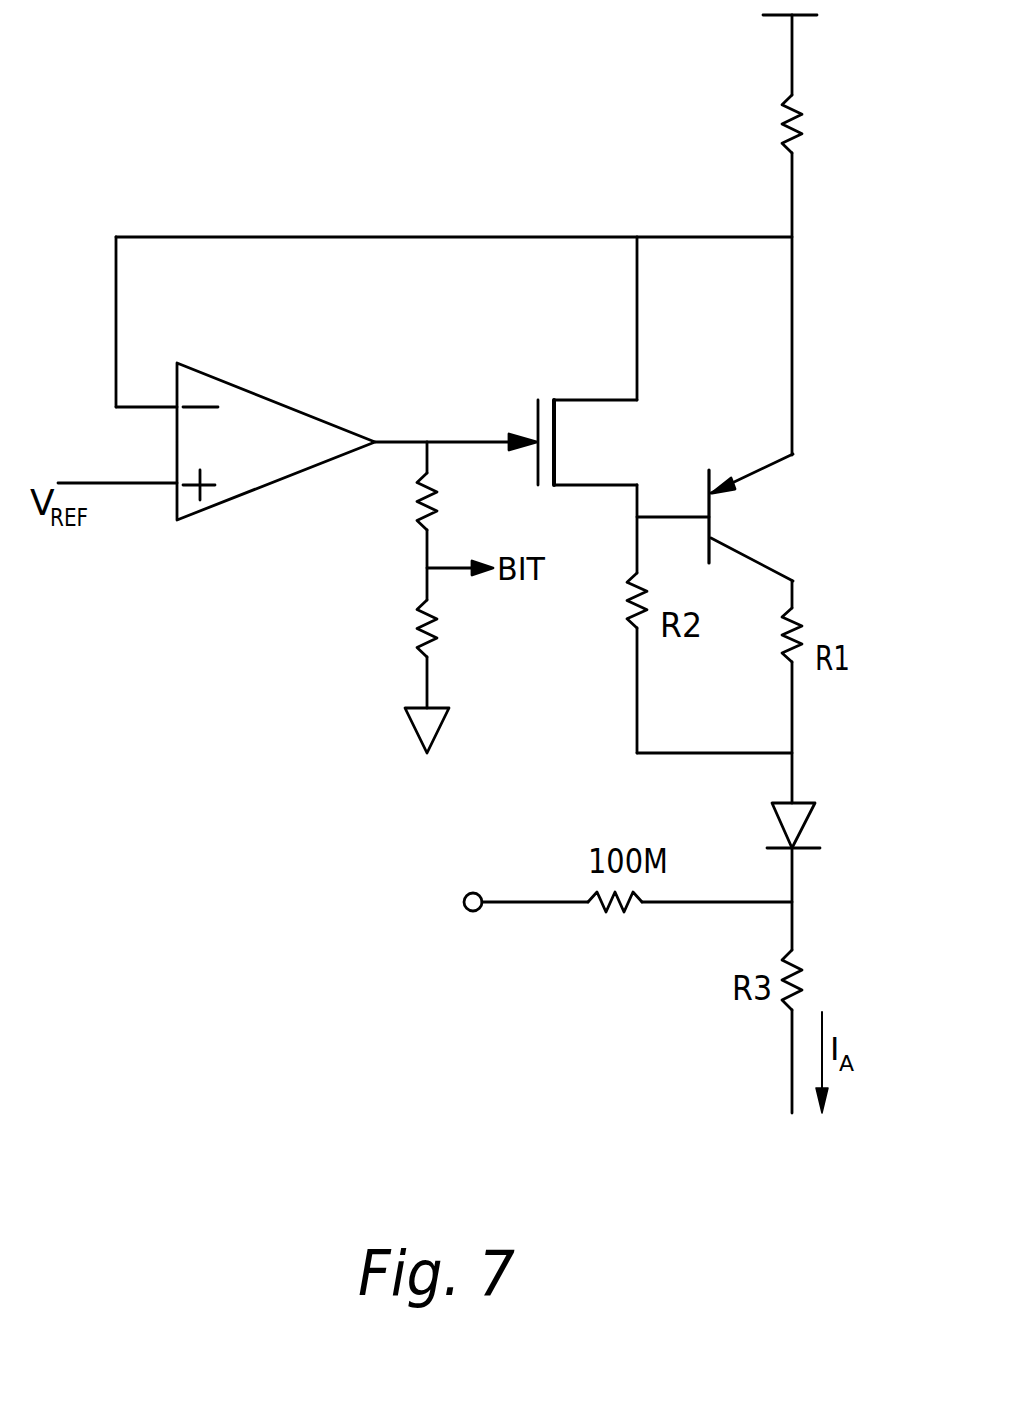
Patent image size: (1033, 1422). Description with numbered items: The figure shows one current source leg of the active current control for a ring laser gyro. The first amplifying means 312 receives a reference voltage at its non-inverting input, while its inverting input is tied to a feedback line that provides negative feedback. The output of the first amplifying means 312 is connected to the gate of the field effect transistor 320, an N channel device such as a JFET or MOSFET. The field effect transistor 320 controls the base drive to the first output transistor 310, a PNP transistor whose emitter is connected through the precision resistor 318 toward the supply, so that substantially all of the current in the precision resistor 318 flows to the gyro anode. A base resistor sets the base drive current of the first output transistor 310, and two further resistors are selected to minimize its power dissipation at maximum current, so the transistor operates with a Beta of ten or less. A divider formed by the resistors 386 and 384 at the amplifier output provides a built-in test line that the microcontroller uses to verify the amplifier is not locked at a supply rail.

The precision resistor 318 is at (804, 117).
The first amplifying means 312 is at (247, 388).
The field effect transistor 320 is at (600, 397).
The first output transistor 310 is at (712, 518).
The resistor 386 is at (435, 492).
The resistor 384 is at (435, 640).